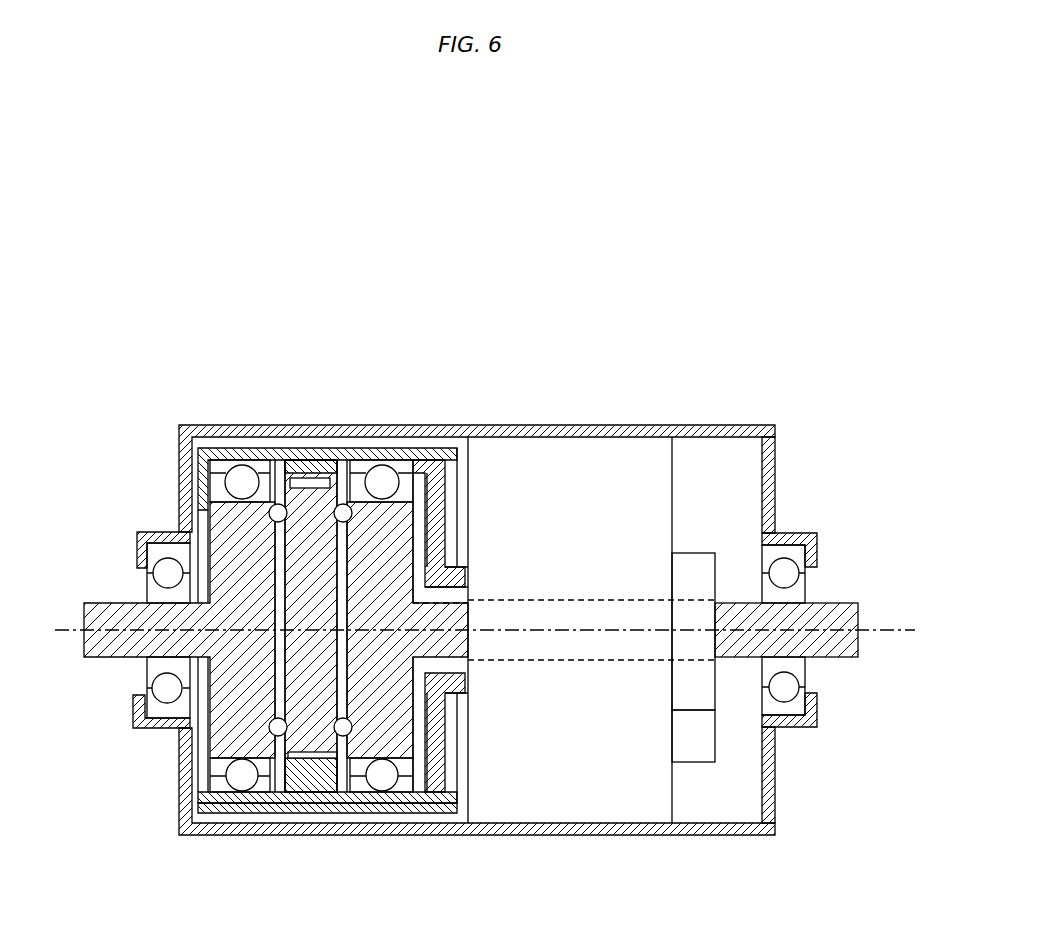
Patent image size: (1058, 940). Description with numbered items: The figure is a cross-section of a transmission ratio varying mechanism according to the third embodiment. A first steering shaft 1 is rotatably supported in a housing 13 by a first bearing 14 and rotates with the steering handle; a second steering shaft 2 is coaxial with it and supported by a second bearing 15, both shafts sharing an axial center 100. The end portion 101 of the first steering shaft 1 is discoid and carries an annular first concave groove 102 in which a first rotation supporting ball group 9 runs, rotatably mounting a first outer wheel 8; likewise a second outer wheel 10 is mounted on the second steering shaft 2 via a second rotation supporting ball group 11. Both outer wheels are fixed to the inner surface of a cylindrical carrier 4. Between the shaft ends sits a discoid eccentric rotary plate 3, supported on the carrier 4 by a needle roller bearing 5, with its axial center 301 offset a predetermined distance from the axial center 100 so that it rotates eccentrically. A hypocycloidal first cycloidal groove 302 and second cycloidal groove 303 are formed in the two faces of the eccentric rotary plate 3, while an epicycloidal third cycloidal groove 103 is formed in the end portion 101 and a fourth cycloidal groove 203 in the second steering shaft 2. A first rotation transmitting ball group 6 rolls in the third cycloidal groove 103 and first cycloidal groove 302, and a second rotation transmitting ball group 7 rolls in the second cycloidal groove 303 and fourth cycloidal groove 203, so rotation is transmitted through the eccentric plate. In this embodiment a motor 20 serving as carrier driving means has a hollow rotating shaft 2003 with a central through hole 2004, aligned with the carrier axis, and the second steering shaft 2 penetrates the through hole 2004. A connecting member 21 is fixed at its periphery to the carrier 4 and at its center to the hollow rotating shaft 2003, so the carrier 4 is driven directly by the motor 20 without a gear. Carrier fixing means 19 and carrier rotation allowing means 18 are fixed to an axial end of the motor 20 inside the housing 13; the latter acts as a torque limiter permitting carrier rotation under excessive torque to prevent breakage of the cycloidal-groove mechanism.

The first steering shaft 1 is at (113, 652).
The second steering shaft 2 is at (853, 625).
The eccentric rotary plate 3 is at (282, 478).
The carrier 4 is at (395, 448).
The bearing 5 is at (308, 798).
The first rotation transmitting ball group 6 is at (220, 556).
The second rotation transmitting ball group 7 is at (353, 520).
The first outer wheel 8 is at (215, 462).
The first rotation supporting ball group 9 is at (243, 464).
The second outer wheel 10 is at (368, 790).
The second rotation supporting ball group 11 is at (385, 795).
The housing 13 is at (733, 426).
The first bearing 14 is at (150, 708).
The second bearing 15 is at (823, 558).
The carrier rotation allowing means 18 is at (700, 565).
The carrier fixing means 19 is at (700, 760).
The motor 20 is at (628, 456).
The connecting member 21 is at (432, 463).
The axial center 100 is at (508, 660).
The end portion 101 is at (222, 520).
The first concave groove 102 is at (212, 488).
The third cycloidal groove 103 is at (242, 476).
The fourth cycloidal groove 203 is at (345, 765).
The axial center 301 is at (322, 598).
The first cycloidal groove 302 is at (270, 800).
The second cycloidal groove 303 is at (337, 480).
The hollow rotating shaft 2003 is at (458, 680).
The through hole 2004 is at (450, 595).